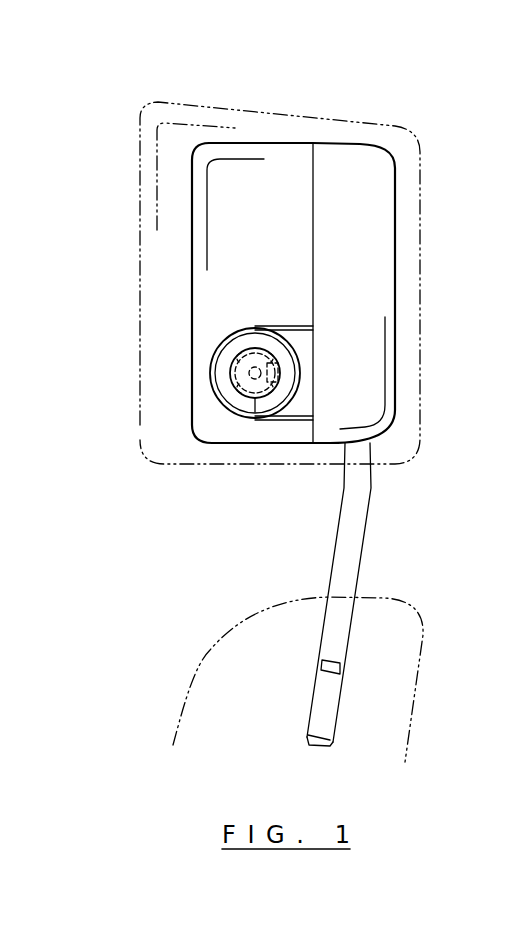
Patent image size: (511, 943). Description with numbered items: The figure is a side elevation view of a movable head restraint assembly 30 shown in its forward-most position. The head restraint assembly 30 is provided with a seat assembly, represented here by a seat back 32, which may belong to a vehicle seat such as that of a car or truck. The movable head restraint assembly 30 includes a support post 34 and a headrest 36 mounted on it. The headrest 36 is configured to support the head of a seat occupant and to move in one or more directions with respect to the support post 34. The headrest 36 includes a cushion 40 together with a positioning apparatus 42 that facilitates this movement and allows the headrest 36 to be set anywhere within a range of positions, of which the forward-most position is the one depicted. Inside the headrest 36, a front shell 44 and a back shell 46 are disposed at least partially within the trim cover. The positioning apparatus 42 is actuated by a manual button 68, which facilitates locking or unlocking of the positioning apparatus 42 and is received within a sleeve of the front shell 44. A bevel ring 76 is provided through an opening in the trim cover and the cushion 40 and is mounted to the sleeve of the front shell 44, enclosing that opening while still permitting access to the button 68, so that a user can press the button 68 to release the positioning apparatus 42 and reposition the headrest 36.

The movable head restraint assembly 30 is at (308, 96).
The seat back 32 is at (210, 652).
The support post 34 is at (352, 535).
The headrest 36 is at (140, 185).
The cushion 40 is at (142, 210).
The positioning apparatus 42 is at (208, 384).
The front shell 44 is at (190, 178).
The back shell 46 is at (396, 158).
The manual button 68 is at (230, 368).
The bevel ring 76 is at (257, 414).